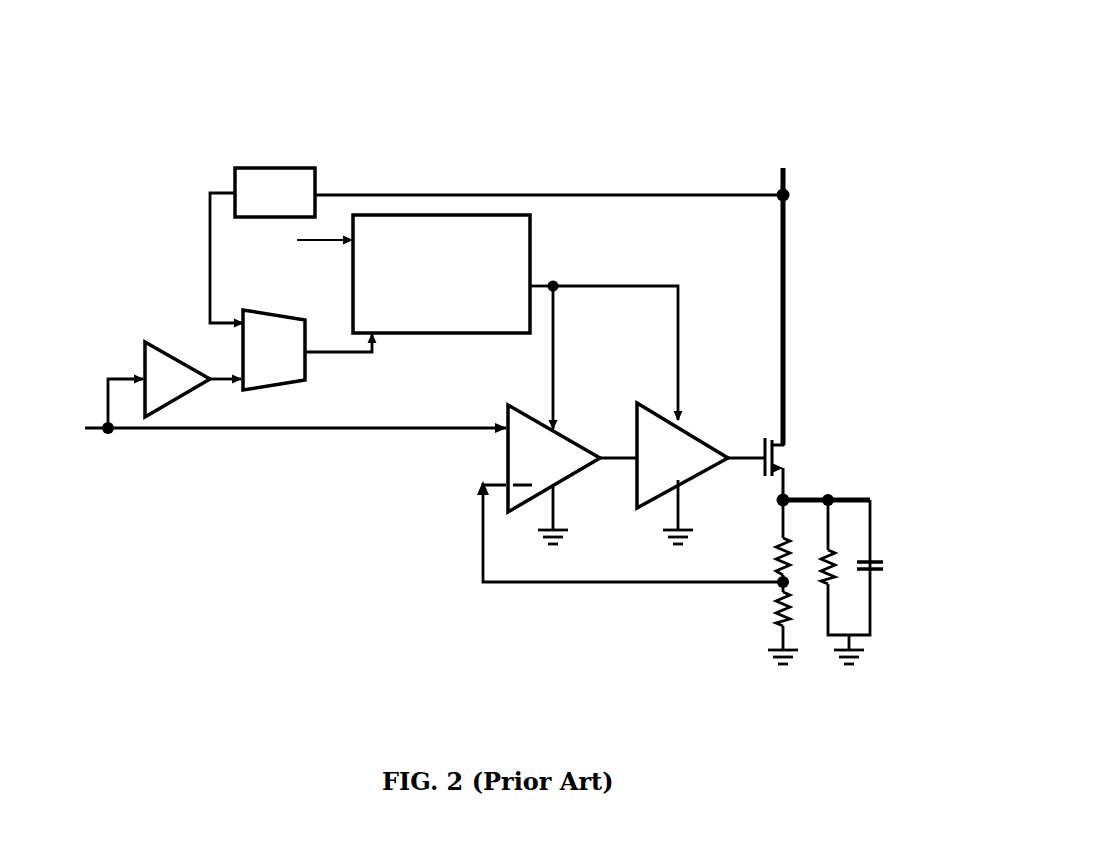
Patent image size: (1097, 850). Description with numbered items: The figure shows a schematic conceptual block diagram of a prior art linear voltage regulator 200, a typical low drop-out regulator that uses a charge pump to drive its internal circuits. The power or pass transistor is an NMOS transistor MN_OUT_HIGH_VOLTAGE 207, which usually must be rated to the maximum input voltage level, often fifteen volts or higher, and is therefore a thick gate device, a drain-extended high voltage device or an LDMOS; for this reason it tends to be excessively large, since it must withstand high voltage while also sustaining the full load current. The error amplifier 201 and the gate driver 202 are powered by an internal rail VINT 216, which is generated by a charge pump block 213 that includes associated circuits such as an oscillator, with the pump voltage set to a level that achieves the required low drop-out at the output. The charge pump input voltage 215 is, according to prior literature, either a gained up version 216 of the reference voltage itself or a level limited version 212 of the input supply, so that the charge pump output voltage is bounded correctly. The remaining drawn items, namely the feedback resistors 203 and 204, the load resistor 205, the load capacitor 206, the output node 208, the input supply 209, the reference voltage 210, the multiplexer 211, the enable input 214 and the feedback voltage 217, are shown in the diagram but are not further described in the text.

The linear voltage regulator 200 is at (567, 128).
The error amplifier 201 is at (578, 423).
The gate driver 202 is at (705, 428).
The feedback resistor R2 203 is at (757, 532).
The feedback resistor R1 204 is at (758, 627).
The load resistor RL 205 is at (822, 595).
The load capacitor CL 206 is at (882, 578).
The NMOS transistor MN_OUT_HIGH_VOLTAGE 207 is at (793, 437).
The output voltage node VOUT 208 is at (880, 495).
The input voltage VIN 209 is at (780, 138).
The reference voltage VREF 210 is at (97, 440).
The multiplexer 211 is at (312, 372).
The level limited version of the input supply 212 is at (278, 165).
The charge pump block 213 is at (538, 228).
The LDO enable signal 214 is at (297, 247).
The charge pump input voltage 215 is at (356, 347).
The internal rail VINT 216 is at (158, 330).
The feedback voltage VFB 217 is at (615, 592).